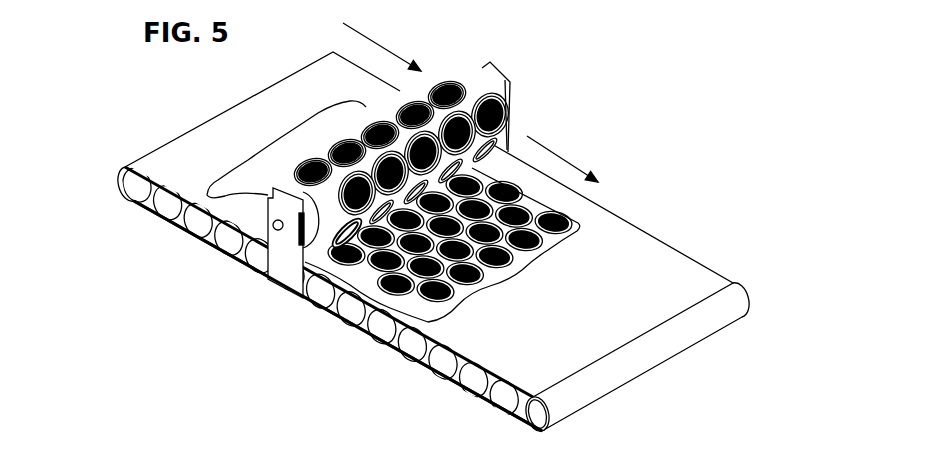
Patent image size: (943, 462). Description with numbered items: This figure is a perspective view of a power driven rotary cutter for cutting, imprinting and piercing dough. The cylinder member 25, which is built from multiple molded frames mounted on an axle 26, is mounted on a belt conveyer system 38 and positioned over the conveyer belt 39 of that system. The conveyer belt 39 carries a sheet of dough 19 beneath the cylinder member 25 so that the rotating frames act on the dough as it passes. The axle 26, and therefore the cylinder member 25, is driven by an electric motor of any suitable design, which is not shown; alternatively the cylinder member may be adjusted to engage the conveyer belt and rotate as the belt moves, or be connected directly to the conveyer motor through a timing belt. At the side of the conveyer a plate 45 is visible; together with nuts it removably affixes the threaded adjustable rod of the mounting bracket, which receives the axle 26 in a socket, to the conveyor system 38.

The sheet of dough 19 is at (580, 227).
The cylinder member 25 is at (473, 88).
The axle 26 is at (276, 228).
The belt conveyer system 38 is at (397, 243).
The conveyer belt 39 is at (650, 263).
The plate 45 is at (288, 263).